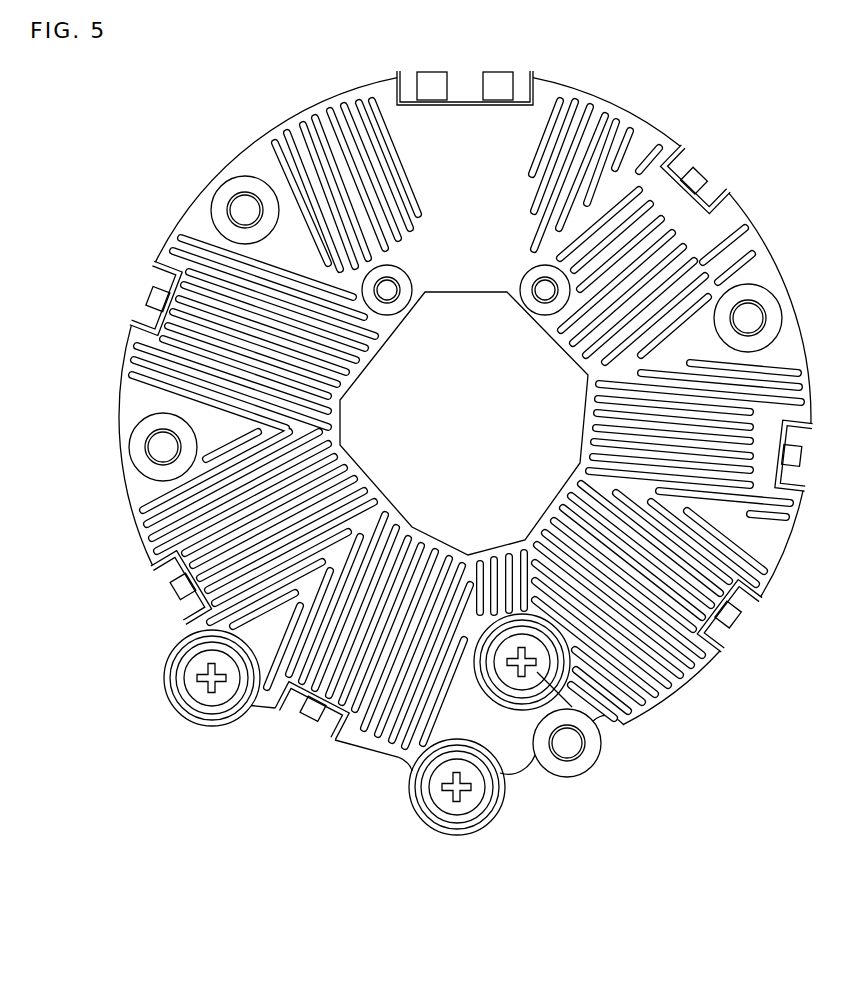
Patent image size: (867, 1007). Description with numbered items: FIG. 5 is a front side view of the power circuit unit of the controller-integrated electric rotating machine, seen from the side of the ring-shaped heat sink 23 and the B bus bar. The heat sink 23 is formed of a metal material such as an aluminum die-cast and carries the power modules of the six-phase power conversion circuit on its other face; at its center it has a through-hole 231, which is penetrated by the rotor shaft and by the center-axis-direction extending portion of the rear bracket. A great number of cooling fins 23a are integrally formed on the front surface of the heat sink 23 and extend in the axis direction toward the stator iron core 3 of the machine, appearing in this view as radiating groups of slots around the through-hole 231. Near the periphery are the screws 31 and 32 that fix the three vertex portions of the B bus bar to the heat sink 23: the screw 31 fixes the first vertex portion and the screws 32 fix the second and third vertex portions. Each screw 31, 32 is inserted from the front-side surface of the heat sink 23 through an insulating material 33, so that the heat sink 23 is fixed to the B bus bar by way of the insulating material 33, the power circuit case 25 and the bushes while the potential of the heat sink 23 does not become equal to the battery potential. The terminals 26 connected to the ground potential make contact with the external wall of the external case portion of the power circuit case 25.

The stator iron core 3 is at (424, 790).
The heat sink 23 is at (340, 697).
The cooling fins 23a is at (398, 722).
The power circuit case 25 is at (157, 573).
The engaging tab 26 is at (165, 605).
The screw 31 is at (623, 725).
The screw 32 is at (208, 700).
The insulating material 33 is at (183, 712).
The through-hole 231 is at (537, 325).